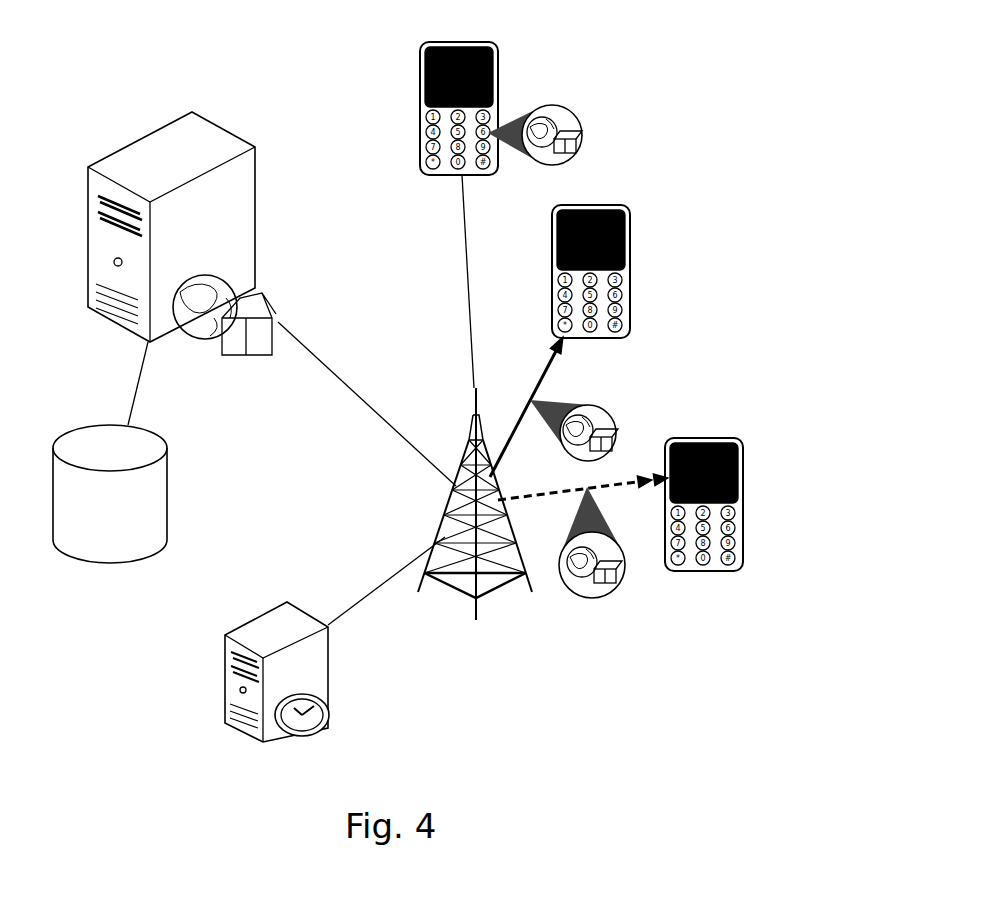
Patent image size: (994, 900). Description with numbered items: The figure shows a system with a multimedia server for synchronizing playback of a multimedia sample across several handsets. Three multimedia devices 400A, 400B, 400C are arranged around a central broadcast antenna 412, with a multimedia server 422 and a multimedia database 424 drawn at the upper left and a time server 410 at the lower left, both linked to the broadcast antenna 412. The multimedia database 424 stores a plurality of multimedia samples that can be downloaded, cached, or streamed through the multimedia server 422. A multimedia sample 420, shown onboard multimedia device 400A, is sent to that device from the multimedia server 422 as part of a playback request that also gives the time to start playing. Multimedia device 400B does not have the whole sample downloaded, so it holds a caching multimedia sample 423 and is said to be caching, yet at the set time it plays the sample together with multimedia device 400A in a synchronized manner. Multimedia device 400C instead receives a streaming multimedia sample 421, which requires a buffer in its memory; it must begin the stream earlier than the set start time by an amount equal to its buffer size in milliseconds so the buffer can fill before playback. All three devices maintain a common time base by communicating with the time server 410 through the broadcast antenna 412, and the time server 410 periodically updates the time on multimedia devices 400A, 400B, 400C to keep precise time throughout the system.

The multimedia device 400A is at (526, 99).
The multimedia device 400B is at (658, 248).
The multimedia device 400C is at (755, 477).
The time server 410 is at (217, 696).
The broadcast antenna 412 is at (513, 532).
The multimedia sample 420 is at (599, 116).
The streaming multimedia sample 421 is at (651, 568).
The multimedia server 422 is at (218, 211).
The caching multimedia sample 423 is at (633, 406).
The multimedia database 424 is at (176, 494).